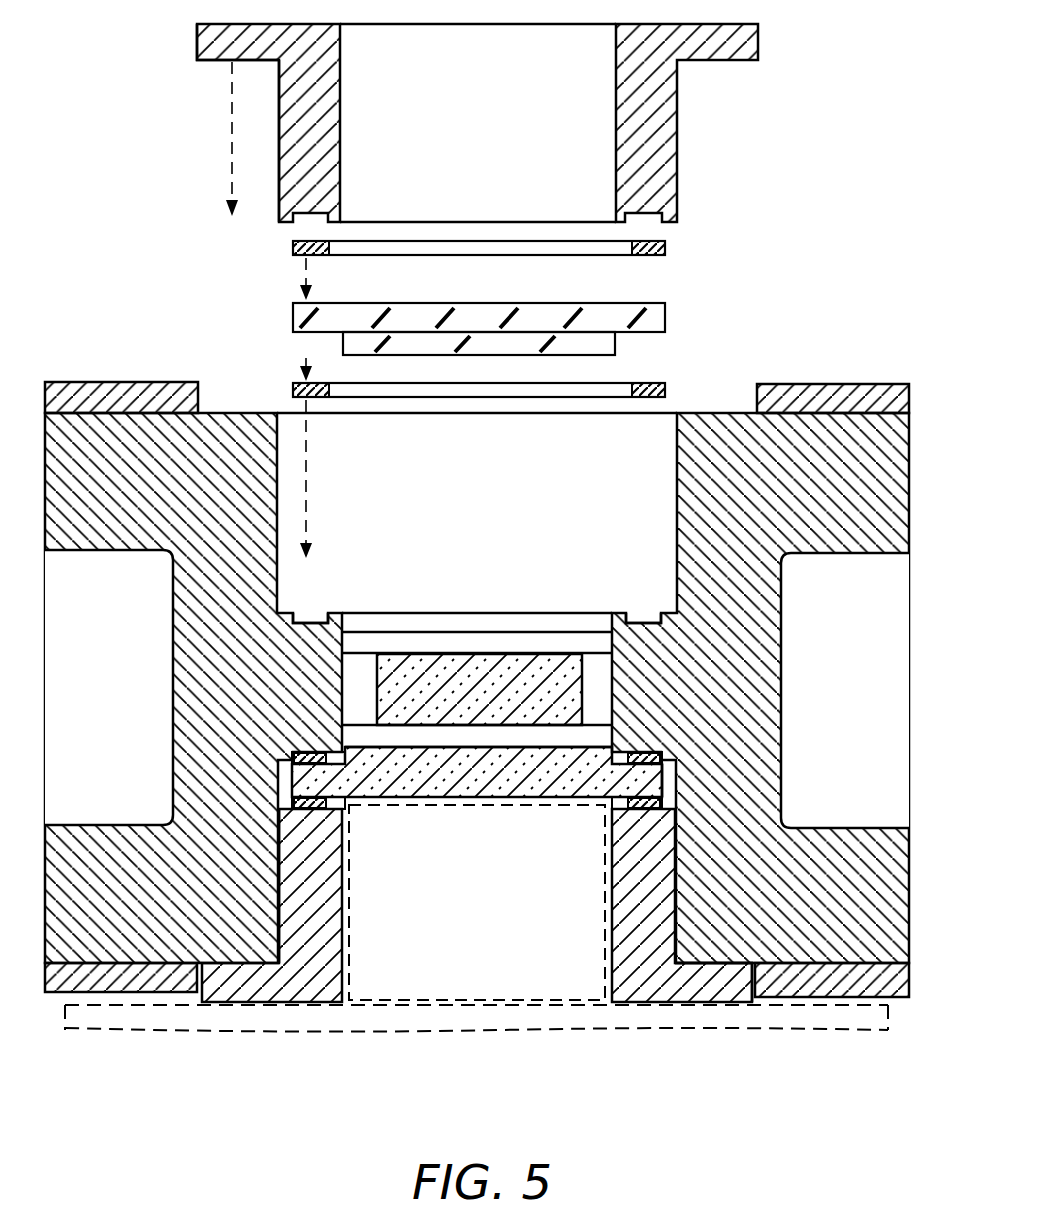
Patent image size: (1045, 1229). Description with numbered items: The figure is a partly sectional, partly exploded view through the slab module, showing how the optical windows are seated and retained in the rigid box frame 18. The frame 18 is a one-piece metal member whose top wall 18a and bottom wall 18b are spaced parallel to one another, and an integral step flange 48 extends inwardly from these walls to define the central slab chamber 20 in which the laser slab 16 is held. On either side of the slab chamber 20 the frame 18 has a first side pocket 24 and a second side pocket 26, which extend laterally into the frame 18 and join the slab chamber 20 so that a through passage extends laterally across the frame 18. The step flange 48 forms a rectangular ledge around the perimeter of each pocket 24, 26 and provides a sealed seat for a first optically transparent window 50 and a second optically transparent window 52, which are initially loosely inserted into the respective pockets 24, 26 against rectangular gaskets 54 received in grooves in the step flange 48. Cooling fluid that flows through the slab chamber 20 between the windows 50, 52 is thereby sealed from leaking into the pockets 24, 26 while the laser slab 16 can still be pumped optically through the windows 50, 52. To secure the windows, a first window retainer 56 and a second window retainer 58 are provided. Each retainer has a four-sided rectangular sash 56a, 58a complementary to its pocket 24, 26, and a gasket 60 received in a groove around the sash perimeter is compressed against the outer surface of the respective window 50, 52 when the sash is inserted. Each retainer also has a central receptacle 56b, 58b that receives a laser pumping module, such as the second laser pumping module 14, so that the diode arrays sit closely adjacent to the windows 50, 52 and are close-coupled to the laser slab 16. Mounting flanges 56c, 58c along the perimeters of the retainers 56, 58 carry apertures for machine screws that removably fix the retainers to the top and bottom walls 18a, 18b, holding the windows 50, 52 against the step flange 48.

The second laser pumping module 14 is at (252, 1018).
The laser slab 16 is at (528, 672).
The box frame 18 is at (487, 658).
The top wall 18a is at (173, 625).
The bottom wall 18b is at (782, 633).
The slab chamber 20 is at (358, 672).
The first side pocket 24 is at (452, 500).
The second side pocket 26 is at (668, 786).
The step flange 48 is at (308, 627).
The first window 50 is at (666, 318).
The second window 52 is at (505, 798).
The gasket 54 is at (666, 392).
The first window retainer 56 is at (775, 38).
The sash 56a is at (341, 92).
The central receptacle 56b is at (497, 150).
The mounting flange 56c is at (197, 30).
The second window retainer 58 is at (545, 955).
The sash 58a is at (341, 840).
The central receptacle 58b is at (518, 918).
The mounting flange 58c is at (850, 1004).
The gasket 60 is at (666, 248).